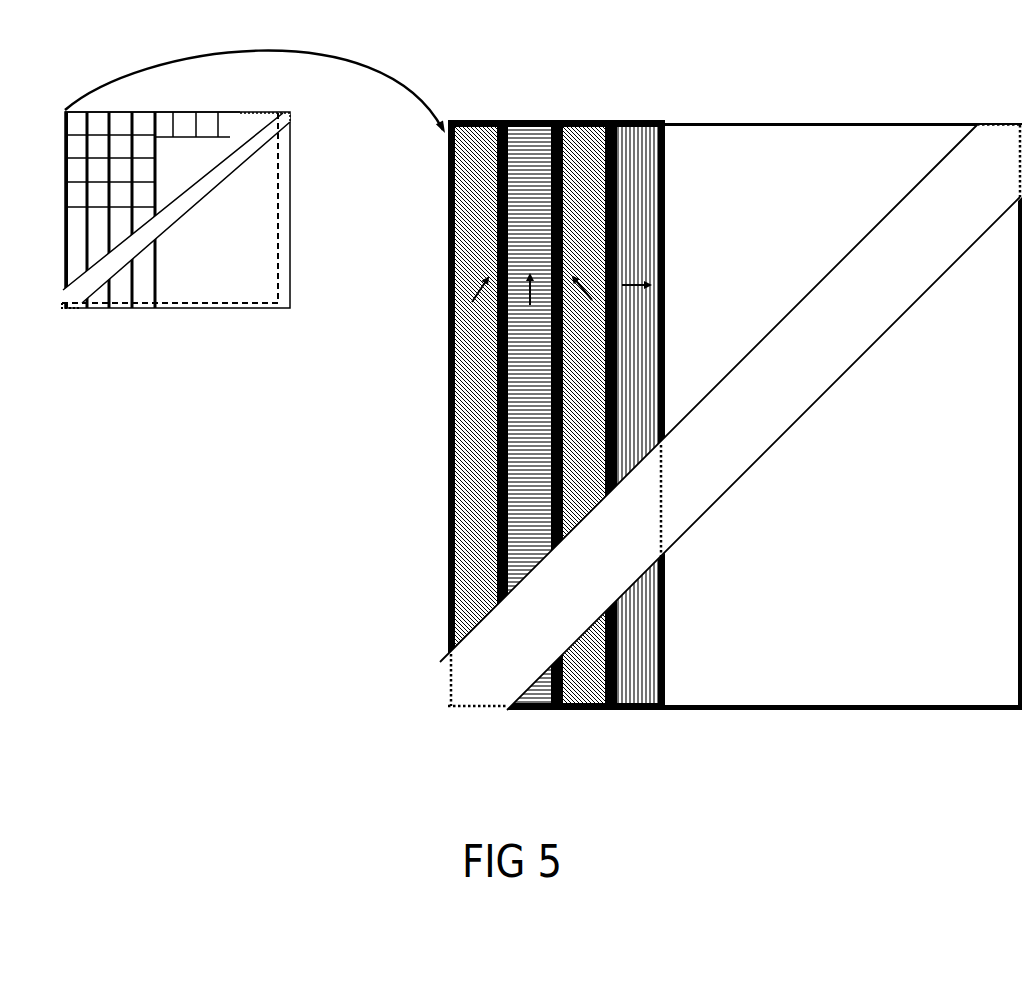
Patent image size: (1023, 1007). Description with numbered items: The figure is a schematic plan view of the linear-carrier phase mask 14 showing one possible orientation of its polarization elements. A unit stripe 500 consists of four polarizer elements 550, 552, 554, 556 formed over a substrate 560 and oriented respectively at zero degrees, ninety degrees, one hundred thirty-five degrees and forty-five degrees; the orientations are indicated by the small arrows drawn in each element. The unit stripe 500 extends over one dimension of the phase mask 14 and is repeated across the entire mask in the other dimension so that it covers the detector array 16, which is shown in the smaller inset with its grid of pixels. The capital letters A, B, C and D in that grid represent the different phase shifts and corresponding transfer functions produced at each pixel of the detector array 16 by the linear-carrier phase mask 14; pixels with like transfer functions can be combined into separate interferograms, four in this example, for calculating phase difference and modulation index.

The linear-carrier phase mask 14 is at (177, 235).
The detector array 16 is at (170, 231).
The unit stripe 500 is at (525, 447).
The polarizer element 550 is at (515, 358).
The polarizer element 552 is at (559, 368).
The polarizer element 554 is at (606, 383).
The polarizer element 556 is at (658, 392).
The substrate 560 is at (843, 449).